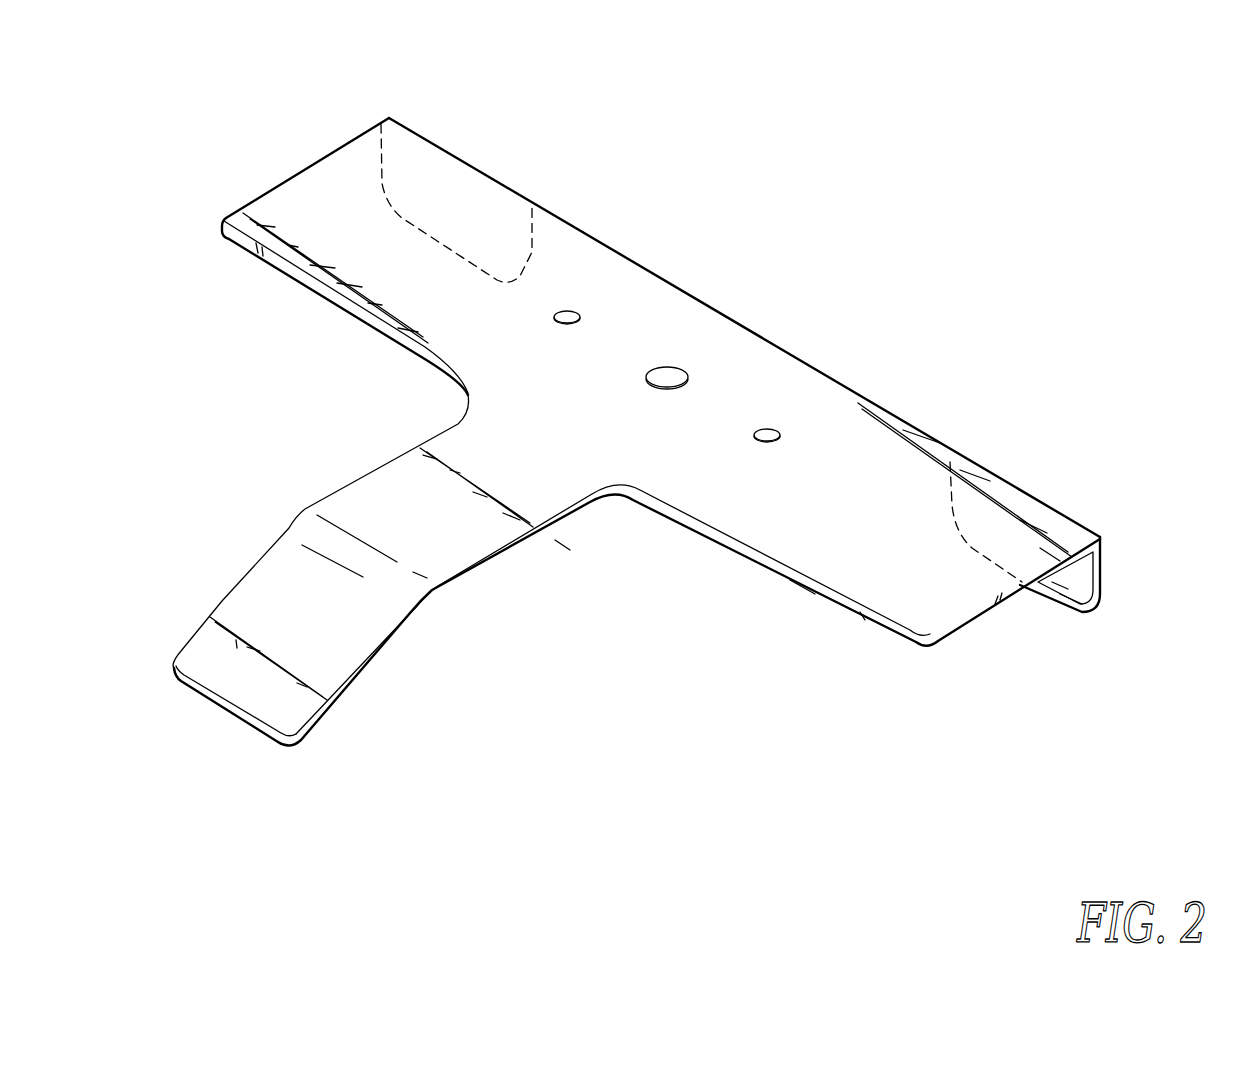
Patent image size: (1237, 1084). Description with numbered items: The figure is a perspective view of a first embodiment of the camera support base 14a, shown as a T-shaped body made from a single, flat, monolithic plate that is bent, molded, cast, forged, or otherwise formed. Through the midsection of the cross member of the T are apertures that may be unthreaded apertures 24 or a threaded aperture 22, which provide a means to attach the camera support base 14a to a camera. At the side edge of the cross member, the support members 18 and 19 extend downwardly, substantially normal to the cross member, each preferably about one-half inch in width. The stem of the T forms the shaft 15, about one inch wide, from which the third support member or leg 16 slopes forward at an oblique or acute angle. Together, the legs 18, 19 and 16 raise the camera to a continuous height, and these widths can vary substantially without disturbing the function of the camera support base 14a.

The camera support base 14a is at (927, 448).
The shaft 15 is at (483, 535).
The leg 16 is at (367, 672).
The support member 18 is at (1105, 573).
The support member 19 is at (378, 155).
The threaded aperture 22 is at (668, 367).
The unthreaded aperture 24 is at (568, 309).